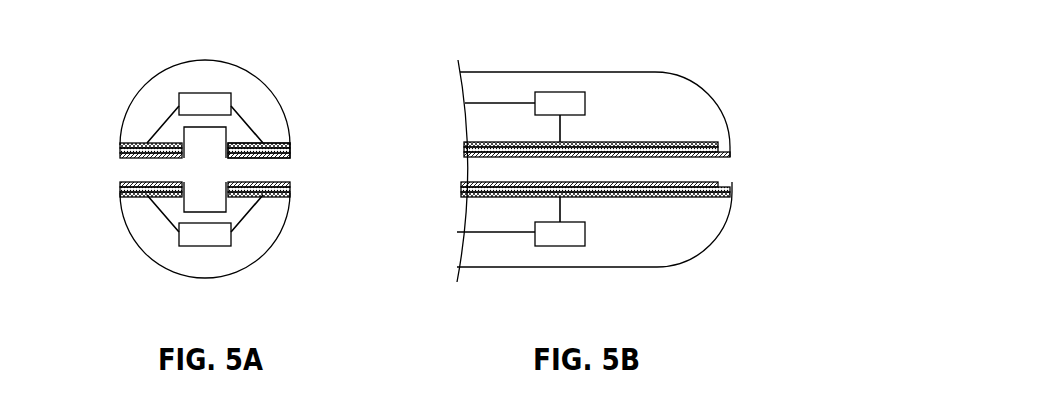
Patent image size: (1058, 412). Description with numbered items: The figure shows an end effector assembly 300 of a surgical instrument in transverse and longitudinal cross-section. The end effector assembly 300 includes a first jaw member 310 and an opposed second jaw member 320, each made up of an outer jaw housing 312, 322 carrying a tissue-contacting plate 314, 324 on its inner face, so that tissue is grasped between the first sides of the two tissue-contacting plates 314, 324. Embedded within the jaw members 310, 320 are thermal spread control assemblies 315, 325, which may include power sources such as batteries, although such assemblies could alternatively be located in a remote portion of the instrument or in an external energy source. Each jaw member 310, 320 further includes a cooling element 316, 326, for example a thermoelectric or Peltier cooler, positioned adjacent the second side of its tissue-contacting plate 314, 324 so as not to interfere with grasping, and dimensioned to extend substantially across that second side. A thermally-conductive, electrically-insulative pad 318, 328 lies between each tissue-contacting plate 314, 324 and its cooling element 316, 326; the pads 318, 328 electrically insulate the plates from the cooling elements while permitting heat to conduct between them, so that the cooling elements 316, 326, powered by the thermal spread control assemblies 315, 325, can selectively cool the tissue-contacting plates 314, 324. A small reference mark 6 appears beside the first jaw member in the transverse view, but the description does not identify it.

In FIG. 5A, the end effector assembly 300 is at (133, 30).
In FIG. 5B, the end effector assembly 300 is at (680, 30).
In FIG. 5A, the first jaw member 310 is at (120, 110).
In FIG. 5B, the first jaw member 310 is at (728, 110).
In FIG. 5A, the outer jaw housing 312 is at (262, 108).
In FIG. 5B, the outer jaw housing 312 is at (630, 92).
In FIG. 5A, the thermal spread control assembly 315 is at (203, 91).
In FIG. 5B, the thermal spread control assembly 315 is at (560, 92).
In FIG. 5A, the cooling element 316 is at (130, 143).
In FIG. 5B, the cooling element 316 is at (707, 140).
In FIG. 5A, the thermally-conductive, electrically-insulative pad 318 is at (132, 150).
In FIG. 5B, the thermally-conductive, electrically-insulative pad 318 is at (710, 148).
In FIG. 5A, the tissue-contacting plate 314 is at (133, 159).
In FIG. 5B, the tissue-contacting plate 314 is at (730, 155).
In FIG. 5A, the contact surface 6 is at (277, 141).
In FIG. 5A, the second jaw member 320 is at (145, 262).
In FIG. 5B, the second jaw member 320 is at (710, 263).
In FIG. 5A, the outer jaw housing 322 is at (257, 233).
In FIG. 5B, the outer jaw housing 322 is at (612, 248).
In FIG. 5A, the thermal spread control assembly 325 is at (205, 246).
In FIG. 5B, the thermal spread control assembly 325 is at (560, 246).
In FIG. 5A, the tissue-contacting plate 324 is at (127, 181).
In FIG. 5B, the tissue-contacting plate 324 is at (710, 180).
In FIG. 5A, the thermally-conductive, electrically-insulative pad 328 is at (130, 190).
In FIG. 5B, the thermally-conductive, electrically-insulative pad 328 is at (713, 192).
In FIG. 5A, the cooling element 326 is at (122, 196).
In FIG. 5B, the cooling element 326 is at (710, 197).